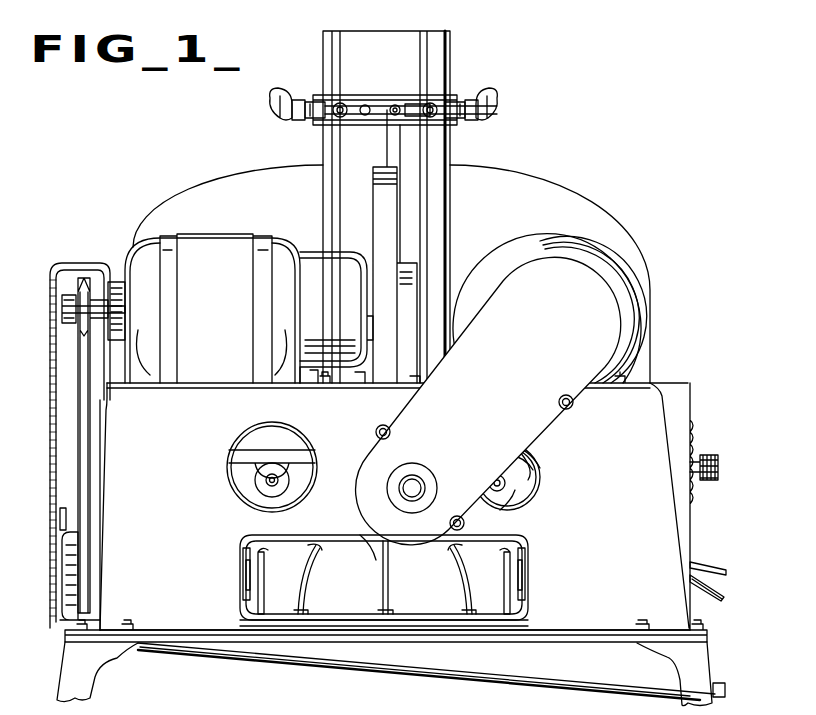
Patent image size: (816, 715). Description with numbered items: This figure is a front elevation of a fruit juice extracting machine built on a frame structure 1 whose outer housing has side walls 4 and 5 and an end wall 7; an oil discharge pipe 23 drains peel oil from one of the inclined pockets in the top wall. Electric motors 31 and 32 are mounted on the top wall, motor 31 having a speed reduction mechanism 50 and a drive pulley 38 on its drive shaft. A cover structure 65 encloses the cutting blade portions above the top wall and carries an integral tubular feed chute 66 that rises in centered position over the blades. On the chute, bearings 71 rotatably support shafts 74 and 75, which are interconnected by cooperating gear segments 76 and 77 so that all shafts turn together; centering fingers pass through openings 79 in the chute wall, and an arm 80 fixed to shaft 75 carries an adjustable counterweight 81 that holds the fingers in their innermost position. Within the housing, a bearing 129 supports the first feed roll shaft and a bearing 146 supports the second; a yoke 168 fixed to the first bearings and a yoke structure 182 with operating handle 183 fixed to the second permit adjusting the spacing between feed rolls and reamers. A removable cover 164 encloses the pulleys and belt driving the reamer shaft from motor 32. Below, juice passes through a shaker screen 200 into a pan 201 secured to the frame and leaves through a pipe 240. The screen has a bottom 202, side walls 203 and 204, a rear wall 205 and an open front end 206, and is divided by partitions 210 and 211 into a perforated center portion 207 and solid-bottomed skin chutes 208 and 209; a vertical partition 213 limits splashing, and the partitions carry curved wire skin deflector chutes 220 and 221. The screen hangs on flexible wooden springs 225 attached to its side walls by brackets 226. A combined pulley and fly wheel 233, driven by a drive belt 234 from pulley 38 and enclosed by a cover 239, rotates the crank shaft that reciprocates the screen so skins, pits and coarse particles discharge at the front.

The frame structure 1 is at (710, 640).
The side wall 4 is at (102, 570).
The side wall 5 is at (690, 420).
The end wall 7 is at (184, 565).
The oil discharge pipe 23 is at (724, 570).
The electric motor 31 is at (218, 315).
The electric motor 32 is at (630, 285).
The drive pulley 38 is at (75, 284).
The speed reduction mechanism 50 is at (340, 300).
The cover structure 65 is at (540, 195).
The tubular feed chute 66 is at (448, 62).
The bearing 71 is at (298, 120).
The shaft 74 is at (315, 118).
The shaft 75 is at (457, 118).
The gear segment 76 is at (494, 108).
The gear segment 77 is at (270, 108).
The opening 79 is at (340, 103).
The arm 80 is at (410, 125).
The counterweight 81 is at (445, 100).
The bearing 129 is at (262, 483).
The bearing 146 is at (528, 490).
The removable cover 164 is at (568, 315).
The yoke 168 is at (282, 452).
The yoke structure 182 is at (535, 460).
The operating handle 183 is at (718, 466).
The shaker screen 200 is at (362, 620).
The pan 201 is at (580, 682).
The bottom 202 is at (406, 612).
The side wall 203 is at (264, 590).
The side wall 204 is at (506, 588).
The rear wall 205 is at (372, 592).
The open front end 206 is at (365, 536).
The center portion 207 is at (419, 603).
The skin chute 208 is at (288, 607).
The skin chute 209 is at (504, 607).
The partition 210 is at (304, 580).
The partition 211 is at (468, 580).
The vertical partition 213 is at (388, 580).
The skin deflector chute 220 is at (318, 548).
The skin deflector chute 221 is at (455, 554).
The flexible wooden spring 225 is at (244, 558).
The bracket 226 is at (246, 593).
The combined pulley and fly wheel 233 is at (70, 490).
The drive belt 234 is at (72, 383).
The cover 239 is at (52, 550).
The pipe 240 is at (718, 688).